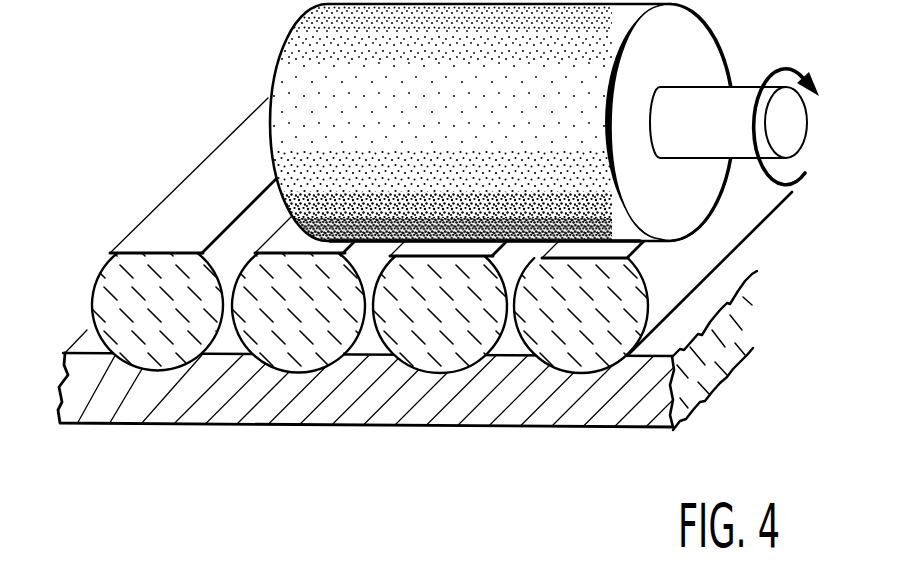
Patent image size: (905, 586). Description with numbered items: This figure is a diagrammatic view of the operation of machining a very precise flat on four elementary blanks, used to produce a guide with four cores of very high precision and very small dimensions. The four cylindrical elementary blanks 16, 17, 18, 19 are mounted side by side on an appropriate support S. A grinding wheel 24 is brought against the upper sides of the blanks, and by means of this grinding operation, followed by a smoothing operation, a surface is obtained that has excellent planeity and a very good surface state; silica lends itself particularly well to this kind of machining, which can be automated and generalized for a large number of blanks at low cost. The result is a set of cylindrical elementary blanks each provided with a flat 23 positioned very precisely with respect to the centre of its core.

The support S is at (72, 386).
The elementary blank 16 is at (145, 360).
The elementary blank 17 is at (292, 358).
The elementary blank 18 is at (437, 362).
The elementary blank 19 is at (590, 362).
The flat 23 is at (150, 237).
The wheel 24 is at (293, 44).